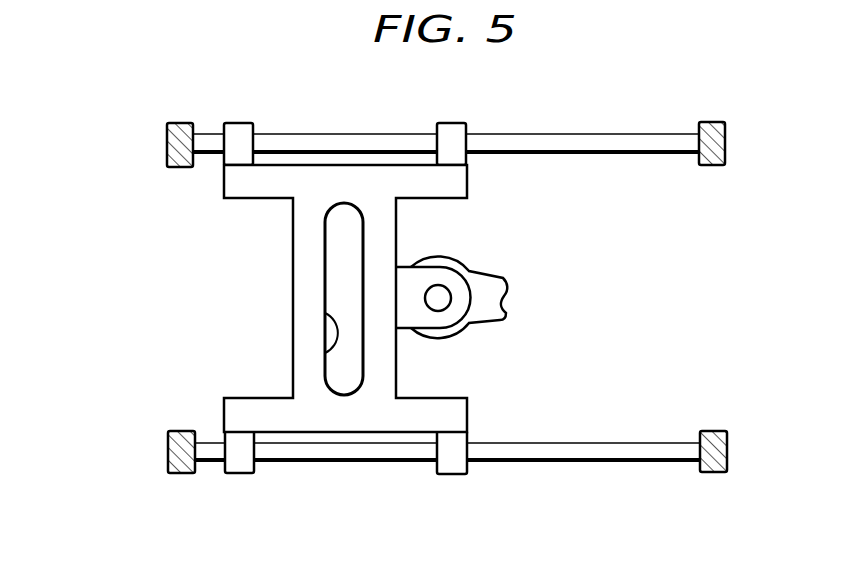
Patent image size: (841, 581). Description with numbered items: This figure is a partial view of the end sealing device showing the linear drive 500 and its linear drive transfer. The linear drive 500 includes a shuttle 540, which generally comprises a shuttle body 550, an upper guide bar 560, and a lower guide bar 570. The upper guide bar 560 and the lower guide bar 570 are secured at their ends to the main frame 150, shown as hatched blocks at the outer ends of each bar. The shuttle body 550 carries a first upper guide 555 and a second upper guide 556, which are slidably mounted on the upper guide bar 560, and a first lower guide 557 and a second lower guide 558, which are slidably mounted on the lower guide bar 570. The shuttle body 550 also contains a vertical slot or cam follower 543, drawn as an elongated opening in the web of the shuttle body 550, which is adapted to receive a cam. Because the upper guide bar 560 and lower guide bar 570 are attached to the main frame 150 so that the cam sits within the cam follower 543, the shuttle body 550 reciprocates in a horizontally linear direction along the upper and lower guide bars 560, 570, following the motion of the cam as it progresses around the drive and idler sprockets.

The main frame 150 is at (178, 122).
The linear drive 500 is at (110, 374).
The shuttle 540 is at (200, 334).
The cam follower 543 is at (325, 313).
The shuttle body 550 is at (293, 243).
The first upper guide 555 is at (237, 122).
The second upper guide 556 is at (452, 122).
The first lower guide 557 is at (238, 474).
The second lower guide 558 is at (453, 474).
The upper guide bar 560 is at (606, 134).
The lower guide bar 570 is at (608, 463).